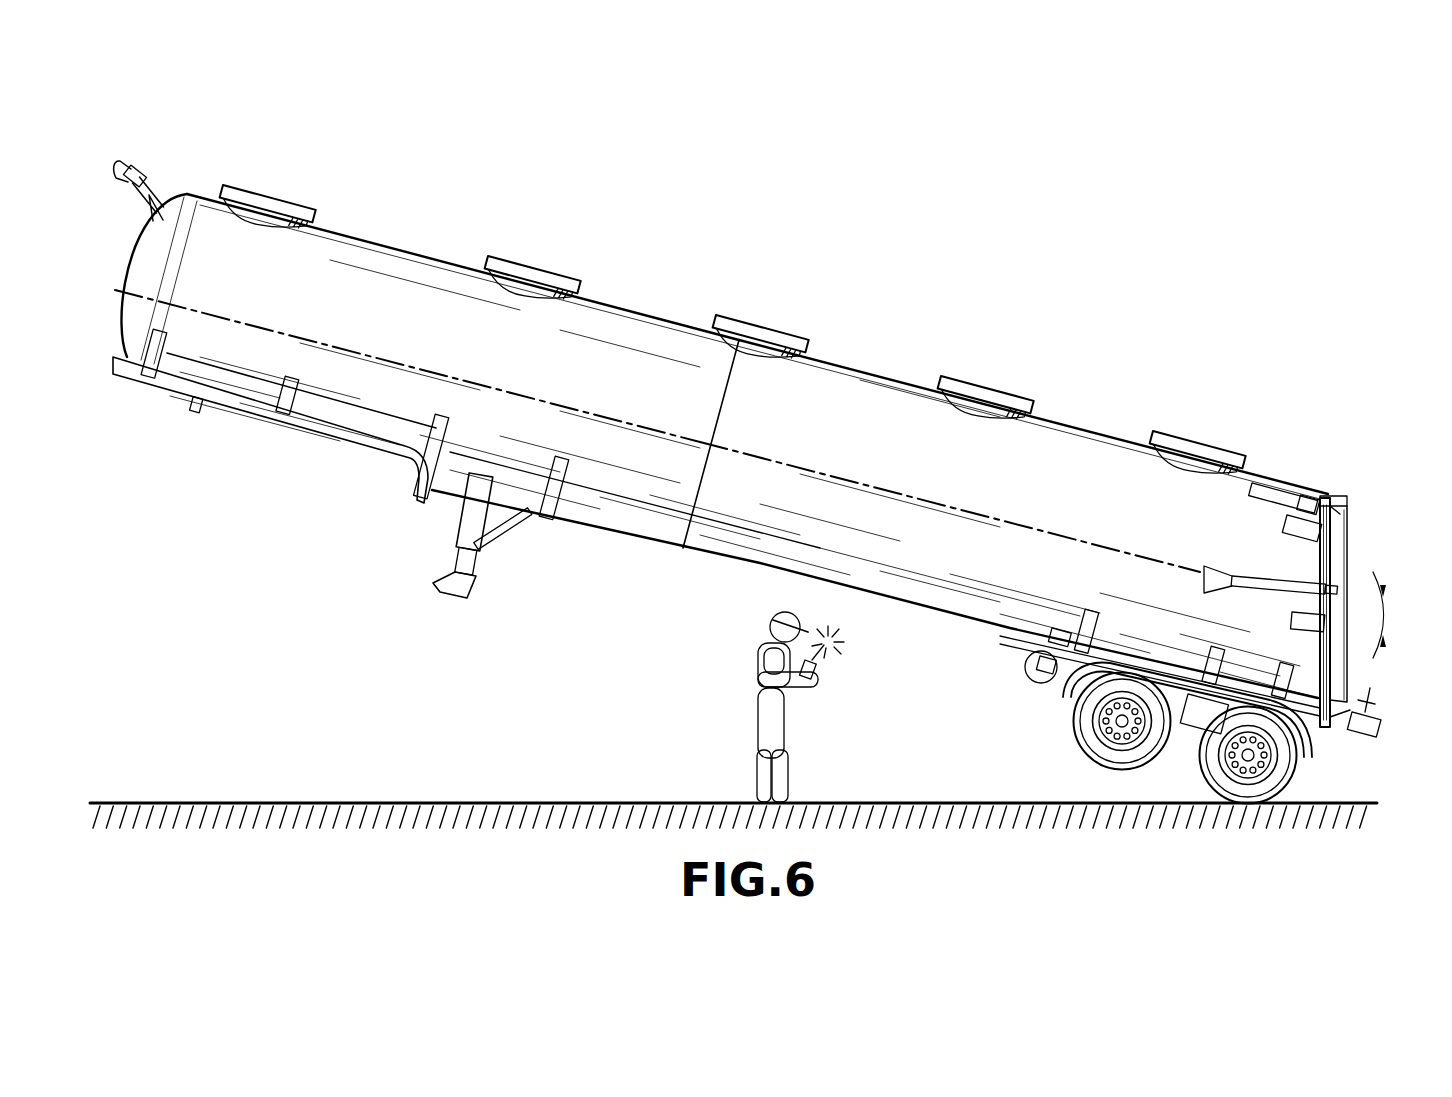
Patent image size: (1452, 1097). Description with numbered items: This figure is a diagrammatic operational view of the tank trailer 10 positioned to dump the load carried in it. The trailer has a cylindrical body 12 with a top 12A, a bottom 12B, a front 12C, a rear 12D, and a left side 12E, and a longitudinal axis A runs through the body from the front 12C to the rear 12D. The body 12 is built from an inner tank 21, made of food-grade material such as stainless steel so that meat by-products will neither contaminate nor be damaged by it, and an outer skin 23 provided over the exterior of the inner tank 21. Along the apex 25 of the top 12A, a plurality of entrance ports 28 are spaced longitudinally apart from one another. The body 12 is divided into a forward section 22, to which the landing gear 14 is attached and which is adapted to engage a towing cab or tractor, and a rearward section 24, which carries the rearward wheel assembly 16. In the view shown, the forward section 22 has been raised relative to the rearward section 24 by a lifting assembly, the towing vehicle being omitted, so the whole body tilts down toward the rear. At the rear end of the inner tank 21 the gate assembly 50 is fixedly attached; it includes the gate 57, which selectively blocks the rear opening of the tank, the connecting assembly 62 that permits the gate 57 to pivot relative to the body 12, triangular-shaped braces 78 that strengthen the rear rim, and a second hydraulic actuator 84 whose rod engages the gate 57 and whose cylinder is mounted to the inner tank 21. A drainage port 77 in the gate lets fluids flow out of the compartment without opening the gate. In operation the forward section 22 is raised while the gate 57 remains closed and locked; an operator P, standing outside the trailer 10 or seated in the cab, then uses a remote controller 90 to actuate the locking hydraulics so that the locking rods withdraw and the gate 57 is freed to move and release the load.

The tank trailer 10 is at (945, 273).
The cylindrical body 12 is at (698, 410).
The top 12A is at (682, 308).
The bottom 12B is at (601, 538).
The front 12C is at (117, 230).
The rear 12D is at (1326, 553).
The left side 12E is at (1047, 522).
The landing gear 14 is at (453, 533).
The rearward wheel assembly 16 is at (1075, 742).
The inner tank 21 is at (408, 326).
The forward section 22 is at (442, 258).
The outer skin 23 is at (614, 384).
The rearward section 24 is at (846, 368).
The apex 25 is at (905, 385).
The entrance ports 28 is at (268, 197).
The gate assembly 50 is at (1324, 601).
The gate 57 is at (1346, 673).
The connecting assembly 62 is at (1316, 484).
The drainage port 77 is at (1380, 728).
The triangular-shaped braces 78 is at (1290, 527).
The second hydraulic actuator 84 is at (1277, 583).
The remote controller 90 is at (818, 670).
The longitudinal axis A is at (468, 383).
The operator P is at (760, 645).